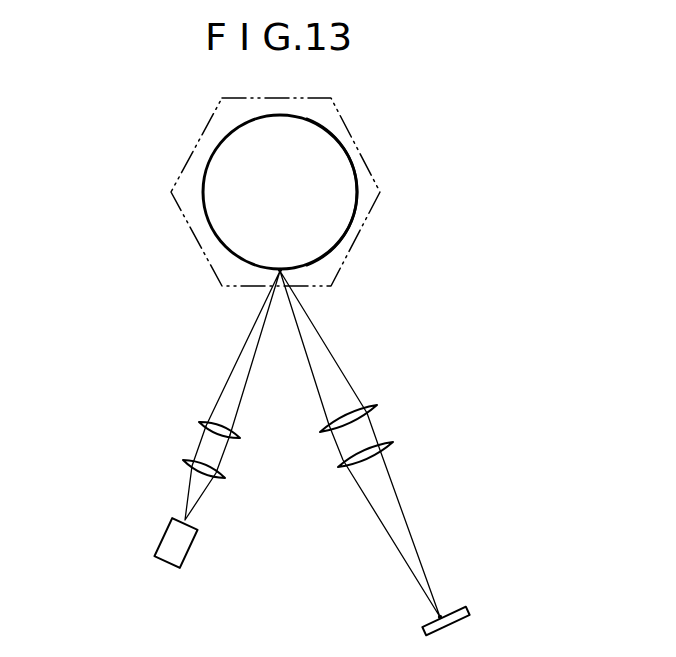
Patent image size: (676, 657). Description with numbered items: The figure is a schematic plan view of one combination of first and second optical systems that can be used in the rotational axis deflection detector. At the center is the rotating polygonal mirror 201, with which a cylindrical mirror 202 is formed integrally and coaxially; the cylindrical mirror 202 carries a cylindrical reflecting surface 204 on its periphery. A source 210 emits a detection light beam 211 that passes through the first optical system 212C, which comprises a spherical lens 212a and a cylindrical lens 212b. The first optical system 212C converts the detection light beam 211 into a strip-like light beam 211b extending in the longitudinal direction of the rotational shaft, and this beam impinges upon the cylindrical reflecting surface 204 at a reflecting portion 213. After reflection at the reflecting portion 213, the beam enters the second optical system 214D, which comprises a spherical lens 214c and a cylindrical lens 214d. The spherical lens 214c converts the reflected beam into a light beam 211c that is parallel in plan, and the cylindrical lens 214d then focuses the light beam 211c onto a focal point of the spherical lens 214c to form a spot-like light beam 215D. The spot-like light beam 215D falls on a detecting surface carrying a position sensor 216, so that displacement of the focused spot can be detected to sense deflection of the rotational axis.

The rotating polygonal mirror 201 is at (346, 128).
The cylindrical mirror 202 is at (348, 192).
The cylindrical reflecting surface 204 is at (351, 161).
The source 210 is at (168, 532).
The detection light beam 211 is at (187, 483).
The strip-like light beam 211b is at (228, 380).
The light beam 211c is at (336, 444).
The spherical lens 212a is at (187, 462).
The cylindrical lens 212b is at (199, 426).
The first optical system 212C is at (144, 440).
The reflecting portion 213 is at (280, 270).
The spherical lens 214c is at (366, 407).
The cylindrical lens 214d is at (392, 442).
The second optical system 214D is at (434, 421).
The spot-like light beam 215D is at (441, 616).
The position sensor 216 is at (468, 614).